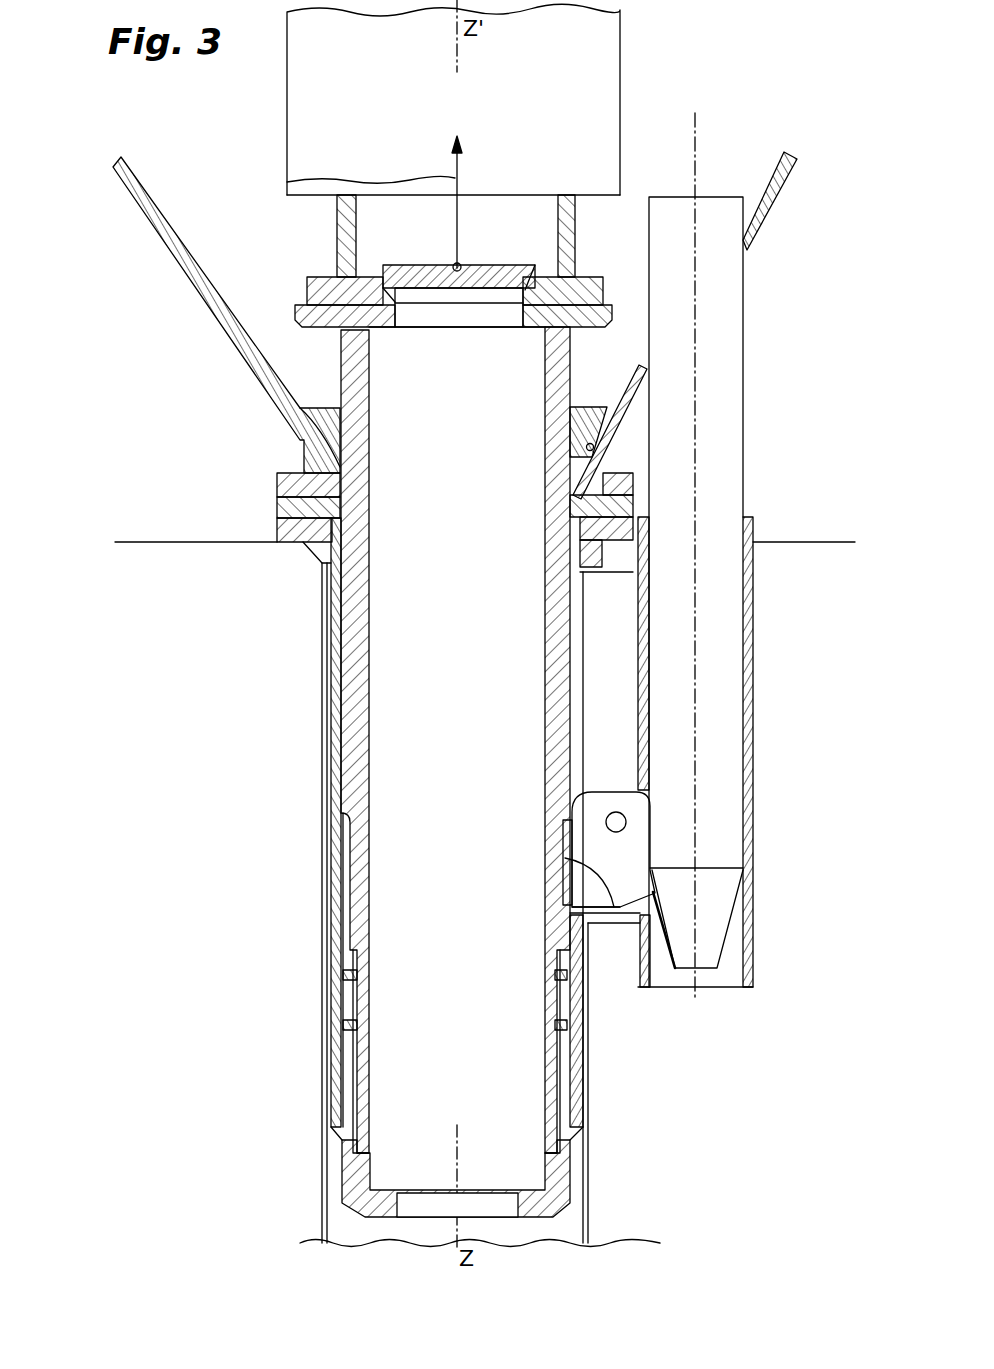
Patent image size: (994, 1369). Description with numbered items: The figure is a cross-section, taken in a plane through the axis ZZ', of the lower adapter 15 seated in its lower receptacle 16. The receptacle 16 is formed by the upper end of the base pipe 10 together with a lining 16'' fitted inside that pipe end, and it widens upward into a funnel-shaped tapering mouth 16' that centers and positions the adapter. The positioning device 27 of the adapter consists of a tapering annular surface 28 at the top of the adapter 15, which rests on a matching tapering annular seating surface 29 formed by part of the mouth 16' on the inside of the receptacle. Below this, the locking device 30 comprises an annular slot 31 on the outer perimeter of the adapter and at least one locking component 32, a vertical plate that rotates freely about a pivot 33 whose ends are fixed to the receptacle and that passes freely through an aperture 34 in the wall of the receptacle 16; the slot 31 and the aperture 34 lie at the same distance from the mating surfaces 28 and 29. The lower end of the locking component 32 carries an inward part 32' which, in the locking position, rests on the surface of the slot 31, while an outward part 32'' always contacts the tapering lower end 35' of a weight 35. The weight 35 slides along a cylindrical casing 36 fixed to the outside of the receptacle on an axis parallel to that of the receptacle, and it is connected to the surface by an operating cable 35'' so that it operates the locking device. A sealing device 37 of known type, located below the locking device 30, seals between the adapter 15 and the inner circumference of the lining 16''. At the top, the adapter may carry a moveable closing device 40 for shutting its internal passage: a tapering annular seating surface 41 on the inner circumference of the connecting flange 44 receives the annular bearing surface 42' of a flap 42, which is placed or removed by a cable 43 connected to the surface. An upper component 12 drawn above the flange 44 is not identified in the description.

The base pipe 10 is at (322, 1220).
The drive head 12 is at (297, 128).
The lower adapter 15 is at (355, 722).
The lower receptacle 16 is at (401, 903).
The funnel-shaped tapering mouth 16' is at (455, 312).
The lining 16'' is at (401, 829).
The positioning device 27 is at (630, 431).
The tapering annular surface 28 is at (593, 437).
The tapering annular seating surface 29 is at (594, 448).
The locking device 30 is at (757, 857).
The annular slot 31 is at (347, 868).
The locking component 32 is at (686, 852).
The part of locking component 32' is at (623, 944).
The part of locking component 32'' is at (704, 955).
The pivot 33 is at (622, 820).
The aperture 34 is at (573, 875).
The weight 35 is at (728, 592).
The tapering lower end 35' is at (734, 918).
The operating cable 35'' is at (733, 556).
The cylindrical casing 36 is at (753, 935).
The sealing device 37 is at (343, 1028).
The moveable closing device 40 is at (541, 270).
The tapering annular seating surface 41 is at (392, 292).
The flap 42 is at (564, 236).
The annular bearing surface 42' is at (385, 281).
The cable 43 is at (335, 190).
The connecting flange 44 is at (336, 212).